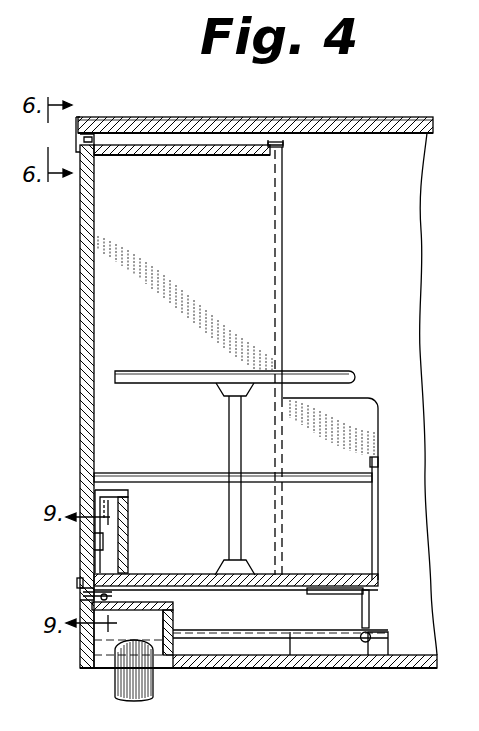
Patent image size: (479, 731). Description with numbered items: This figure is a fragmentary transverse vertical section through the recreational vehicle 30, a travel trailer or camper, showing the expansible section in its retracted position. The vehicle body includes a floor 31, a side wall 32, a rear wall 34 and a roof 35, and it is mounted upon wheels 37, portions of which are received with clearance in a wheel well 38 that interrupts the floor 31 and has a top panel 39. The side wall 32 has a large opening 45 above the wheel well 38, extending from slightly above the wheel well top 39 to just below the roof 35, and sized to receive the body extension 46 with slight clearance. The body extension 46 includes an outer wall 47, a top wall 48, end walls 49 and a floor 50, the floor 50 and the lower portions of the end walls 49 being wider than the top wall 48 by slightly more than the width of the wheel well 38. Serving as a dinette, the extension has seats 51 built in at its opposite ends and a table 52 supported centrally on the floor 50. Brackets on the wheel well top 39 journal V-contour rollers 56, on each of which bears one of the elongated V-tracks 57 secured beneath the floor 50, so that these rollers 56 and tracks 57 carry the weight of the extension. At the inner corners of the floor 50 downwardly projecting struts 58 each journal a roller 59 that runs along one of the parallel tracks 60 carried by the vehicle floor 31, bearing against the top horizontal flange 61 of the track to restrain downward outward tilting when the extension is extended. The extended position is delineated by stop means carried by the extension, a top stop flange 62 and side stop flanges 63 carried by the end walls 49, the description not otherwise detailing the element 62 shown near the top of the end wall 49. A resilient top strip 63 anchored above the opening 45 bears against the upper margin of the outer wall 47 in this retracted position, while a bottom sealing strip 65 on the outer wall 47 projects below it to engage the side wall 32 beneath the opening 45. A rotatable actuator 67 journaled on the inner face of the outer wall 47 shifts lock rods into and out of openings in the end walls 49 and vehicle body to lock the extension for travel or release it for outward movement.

The recreational vehicle 30 is at (399, 108).
The floor 31 is at (328, 661).
The side wall 32 is at (88, 641).
The rear wall 34 is at (421, 196).
The roof 35 is at (376, 133).
The wheels 37 is at (136, 692).
The wheel well 38 is at (175, 619).
The top panel of wheel well 39 is at (137, 604).
The opening 45 is at (92, 130).
The body extension 46 is at (76, 235).
The outer wall 47 is at (86, 310).
The top wall 48 is at (216, 155).
The end walls 49 is at (262, 247).
The floor 50 is at (292, 577).
The seats 51 is at (160, 473).
The table 52 is at (318, 377).
The rollers 56 is at (92, 598).
The V-tracks 57 is at (266, 587).
The struts 58 is at (371, 600).
The roller 59 is at (364, 657).
The tracks 60 is at (235, 638).
The top horizontal flange 61 is at (290, 636).
The partition top fitting 62 is at (283, 175).
The top sealing strip 63 is at (76, 134).
The bottom sealing strip 65 is at (78, 582).
The rotatable actuator 67 is at (96, 546).